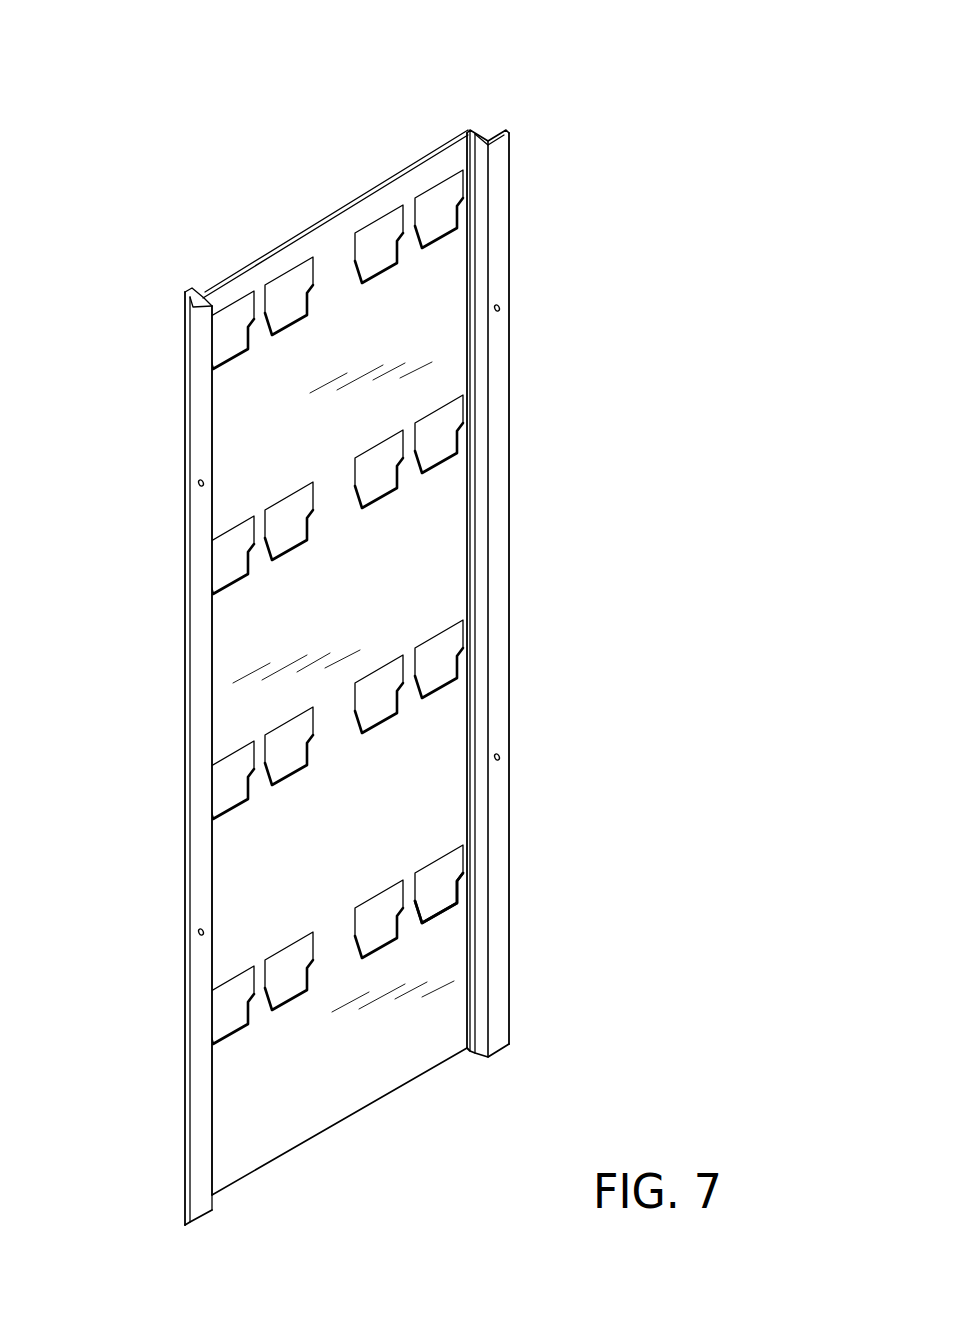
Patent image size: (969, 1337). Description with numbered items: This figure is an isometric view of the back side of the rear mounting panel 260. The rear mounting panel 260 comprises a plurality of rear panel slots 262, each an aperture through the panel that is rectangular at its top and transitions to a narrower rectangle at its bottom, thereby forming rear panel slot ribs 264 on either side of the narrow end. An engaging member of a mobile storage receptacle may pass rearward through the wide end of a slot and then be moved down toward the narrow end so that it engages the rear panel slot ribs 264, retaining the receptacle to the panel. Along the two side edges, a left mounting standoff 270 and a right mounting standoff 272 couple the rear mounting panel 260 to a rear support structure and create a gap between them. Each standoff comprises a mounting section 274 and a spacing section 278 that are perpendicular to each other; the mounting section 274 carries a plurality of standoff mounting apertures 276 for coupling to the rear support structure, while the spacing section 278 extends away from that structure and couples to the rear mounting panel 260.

The rear mounting panel 260 is at (330, 216).
The rear panel slots 262 is at (288, 790).
The rear panel slot ribs 264 is at (425, 900).
The left mounting standoff 270 is at (551, 532).
The right mounting standoff 272 is at (183, 625).
The mounting section 274 is at (507, 128).
The standoff mounting apertures 276 is at (500, 306).
The spacing section 278 is at (487, 128).